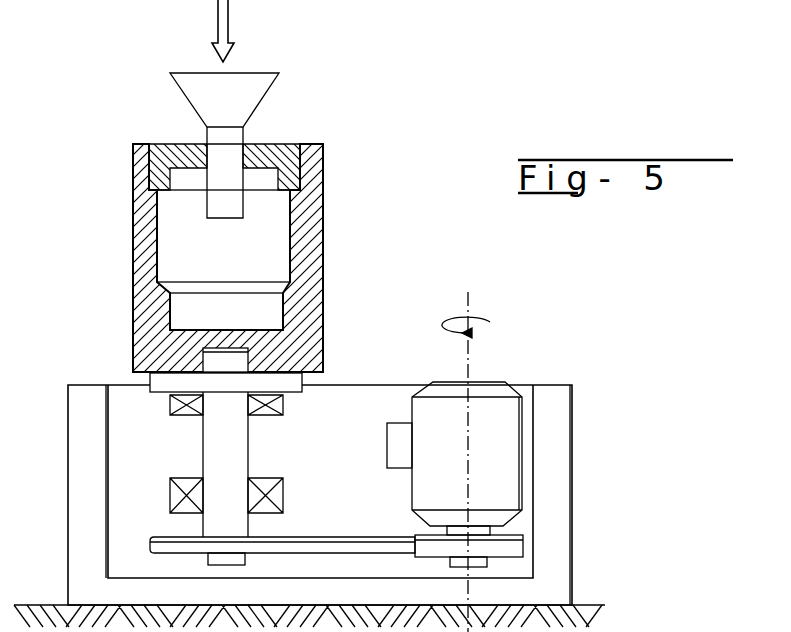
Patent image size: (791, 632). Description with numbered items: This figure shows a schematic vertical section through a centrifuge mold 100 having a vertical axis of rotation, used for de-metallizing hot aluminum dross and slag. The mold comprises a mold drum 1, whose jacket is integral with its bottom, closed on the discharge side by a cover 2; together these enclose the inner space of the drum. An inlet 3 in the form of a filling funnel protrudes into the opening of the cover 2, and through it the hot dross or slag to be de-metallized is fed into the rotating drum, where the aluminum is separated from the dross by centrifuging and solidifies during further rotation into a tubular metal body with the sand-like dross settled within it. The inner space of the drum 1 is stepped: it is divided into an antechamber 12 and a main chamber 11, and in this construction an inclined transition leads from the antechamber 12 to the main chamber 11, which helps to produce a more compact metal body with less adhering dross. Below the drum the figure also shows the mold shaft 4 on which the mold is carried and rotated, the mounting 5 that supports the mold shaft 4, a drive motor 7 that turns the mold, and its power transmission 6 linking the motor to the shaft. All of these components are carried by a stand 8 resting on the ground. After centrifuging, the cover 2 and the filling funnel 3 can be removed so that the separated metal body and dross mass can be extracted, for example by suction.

The centrifuge mold 100 is at (133, 330).
The mold drum 1 is at (302, 247).
The cover 2 is at (270, 150).
The inlet 3 is at (253, 95).
The mold shaft 4 is at (240, 455).
The mounting 5 is at (283, 403).
The power transmission 6 is at (317, 545).
The drive motor 7 is at (454, 458).
The stand 8 is at (557, 517).
The main chamber 11 is at (263, 321).
The antechamber 12 is at (268, 261).